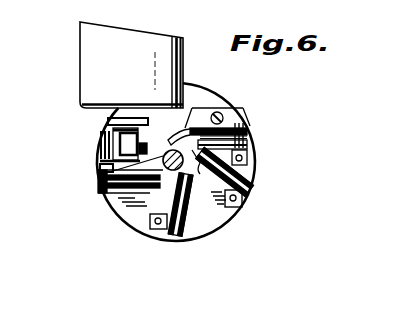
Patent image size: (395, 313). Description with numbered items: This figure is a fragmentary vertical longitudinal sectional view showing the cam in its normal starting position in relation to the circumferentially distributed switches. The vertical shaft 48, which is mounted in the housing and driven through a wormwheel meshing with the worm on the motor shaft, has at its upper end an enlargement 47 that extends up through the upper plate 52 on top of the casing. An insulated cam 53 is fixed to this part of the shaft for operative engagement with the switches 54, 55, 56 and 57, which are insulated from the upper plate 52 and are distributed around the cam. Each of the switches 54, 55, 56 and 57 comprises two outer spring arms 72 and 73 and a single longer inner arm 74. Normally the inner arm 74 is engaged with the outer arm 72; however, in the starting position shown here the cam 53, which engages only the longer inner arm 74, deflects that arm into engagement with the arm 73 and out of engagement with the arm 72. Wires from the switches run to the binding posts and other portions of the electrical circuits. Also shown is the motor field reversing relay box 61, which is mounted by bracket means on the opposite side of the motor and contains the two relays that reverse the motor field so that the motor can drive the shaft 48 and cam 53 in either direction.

The vertical shaft 48 is at (131, 65).
The motor field reversing relay box 61 is at (92, 140).
The enlargement 47 is at (103, 174).
The switch 54 is at (112, 195).
The insulated cam 53 is at (132, 208).
The inner arm 74 is at (174, 130).
The outer spring arm 73 is at (208, 128).
The switch 57 is at (248, 133).
The outer spring arm 72 is at (244, 146).
The switch 56 is at (252, 193).
The switch 55 is at (173, 233).
The upper plate 52 is at (230, 221).